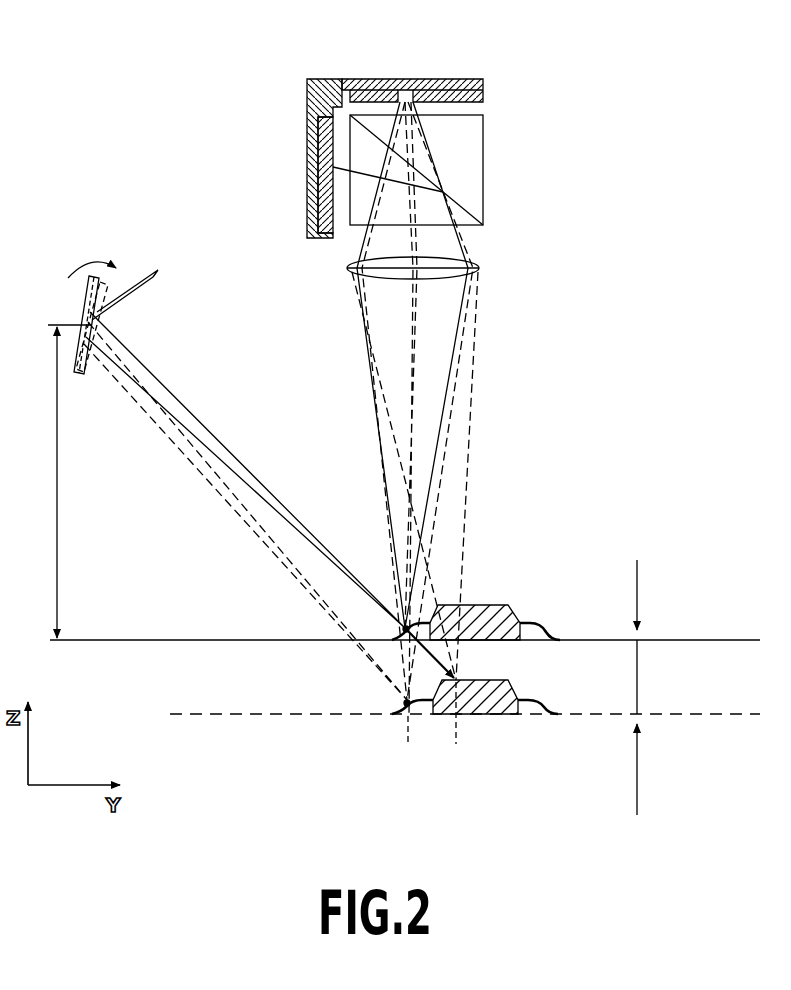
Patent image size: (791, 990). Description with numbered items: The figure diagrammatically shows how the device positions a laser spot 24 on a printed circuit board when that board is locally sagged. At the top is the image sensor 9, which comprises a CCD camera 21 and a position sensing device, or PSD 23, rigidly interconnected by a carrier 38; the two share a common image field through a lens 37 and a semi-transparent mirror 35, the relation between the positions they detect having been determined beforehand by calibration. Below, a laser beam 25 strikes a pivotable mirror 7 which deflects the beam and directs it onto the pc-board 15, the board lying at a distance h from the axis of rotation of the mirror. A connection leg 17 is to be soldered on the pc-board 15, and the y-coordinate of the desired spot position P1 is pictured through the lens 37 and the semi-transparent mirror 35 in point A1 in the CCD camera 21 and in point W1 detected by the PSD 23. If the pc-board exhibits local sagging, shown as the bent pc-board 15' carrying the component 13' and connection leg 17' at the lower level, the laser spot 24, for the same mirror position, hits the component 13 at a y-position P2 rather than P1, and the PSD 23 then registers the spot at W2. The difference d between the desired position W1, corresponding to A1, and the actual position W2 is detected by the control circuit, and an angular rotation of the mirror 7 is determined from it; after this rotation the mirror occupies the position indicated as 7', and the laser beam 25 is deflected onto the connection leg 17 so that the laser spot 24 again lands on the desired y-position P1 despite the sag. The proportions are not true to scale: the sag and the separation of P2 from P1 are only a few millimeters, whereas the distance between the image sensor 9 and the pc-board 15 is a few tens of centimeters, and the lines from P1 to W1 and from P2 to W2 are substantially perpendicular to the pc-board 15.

The pivotable mirror 7 is at (78, 318).
The pivoted mirror position 7' is at (61, 327).
The image sensor 9 is at (640, 170).
The component 13 is at (476, 605).
The object at displaced height 13' is at (478, 689).
The pc-board 15 is at (405, 621).
The bent pc-board 15' is at (465, 731).
The connection leg 17 is at (378, 619).
The displaced light spot 17' is at (376, 697).
The CCD camera 21 is at (326, 130).
The position sensing device 23 is at (483, 96).
The laser spot 24 is at (404, 626).
The laser beam 25 is at (245, 485).
The semi-transparent mirror 35 is at (470, 212).
The lens 37 is at (470, 278).
The carrier 38 is at (312, 92).
The point in CCD camera A1 is at (333, 167).
The desired PSD position W1 is at (440, 80).
The actual PSD position W2 is at (386, 80).
The difference d is at (413, 100).
The distance h is at (61, 481).
The desired position P1 is at (409, 749).
The actual position P2 is at (459, 732).